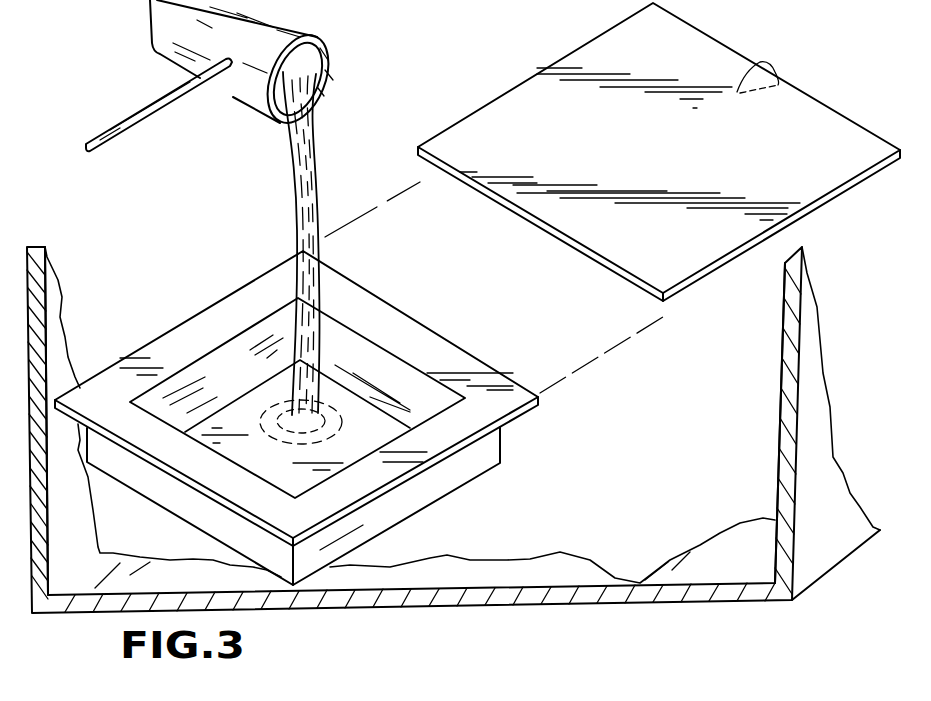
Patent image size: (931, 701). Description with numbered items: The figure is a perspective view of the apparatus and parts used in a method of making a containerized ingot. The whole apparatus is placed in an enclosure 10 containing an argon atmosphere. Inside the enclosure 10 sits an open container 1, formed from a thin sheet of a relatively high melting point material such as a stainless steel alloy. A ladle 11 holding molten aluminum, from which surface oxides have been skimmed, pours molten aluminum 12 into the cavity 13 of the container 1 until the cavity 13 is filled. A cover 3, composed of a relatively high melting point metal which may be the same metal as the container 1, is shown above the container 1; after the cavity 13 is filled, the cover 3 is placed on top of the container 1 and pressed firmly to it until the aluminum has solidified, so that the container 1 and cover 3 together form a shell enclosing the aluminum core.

The open container 1 is at (430, 487).
The cover 3 is at (818, 108).
The enclosure 10 is at (778, 425).
The ladle 11 is at (152, 35).
The molten aluminum 12 is at (297, 218).
The cavity 13 is at (237, 413).